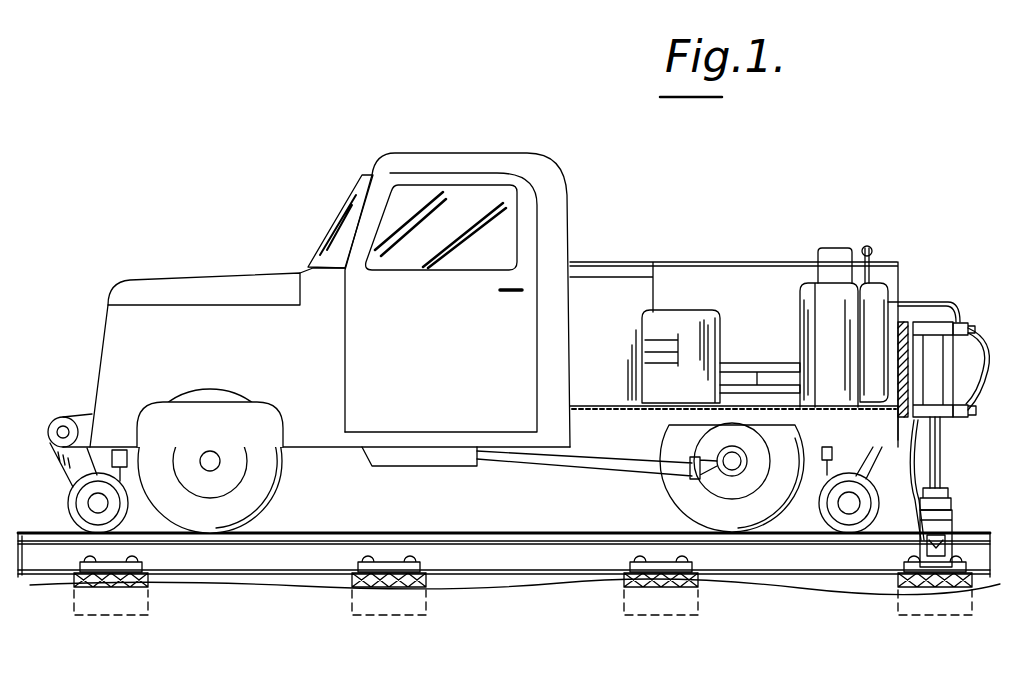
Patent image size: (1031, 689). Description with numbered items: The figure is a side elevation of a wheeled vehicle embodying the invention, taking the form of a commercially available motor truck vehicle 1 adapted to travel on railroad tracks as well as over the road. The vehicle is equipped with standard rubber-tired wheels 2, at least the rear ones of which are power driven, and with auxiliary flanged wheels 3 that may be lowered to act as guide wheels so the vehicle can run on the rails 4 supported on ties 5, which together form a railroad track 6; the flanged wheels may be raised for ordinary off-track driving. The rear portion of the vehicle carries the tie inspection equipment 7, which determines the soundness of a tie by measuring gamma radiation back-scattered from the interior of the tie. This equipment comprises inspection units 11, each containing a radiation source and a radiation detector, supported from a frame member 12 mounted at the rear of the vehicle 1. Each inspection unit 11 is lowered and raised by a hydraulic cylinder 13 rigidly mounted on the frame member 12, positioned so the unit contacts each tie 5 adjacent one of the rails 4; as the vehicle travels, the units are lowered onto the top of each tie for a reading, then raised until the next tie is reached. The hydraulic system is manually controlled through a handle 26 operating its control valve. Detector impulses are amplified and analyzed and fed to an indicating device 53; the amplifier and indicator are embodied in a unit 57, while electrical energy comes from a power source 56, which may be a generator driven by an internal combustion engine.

The motor truck vehicle 1 is at (570, 198).
The rubber-tired wheels 2 is at (274, 491).
The auxiliary flanged wheels 3 is at (67, 506).
The rails 4 is at (515, 529).
The ties 5 is at (425, 580).
The railroad track 6 is at (579, 523).
The inspection equipment 7 is at (955, 473).
The inspection unit 11 is at (953, 523).
The frame member 12 is at (905, 318).
The hydraulic cylinder 13 is at (976, 355).
The handle 26 is at (875, 250).
The indicating device 53 is at (836, 248).
The power source 56 is at (700, 311).
The amplifier and indicator unit 57 is at (791, 280).